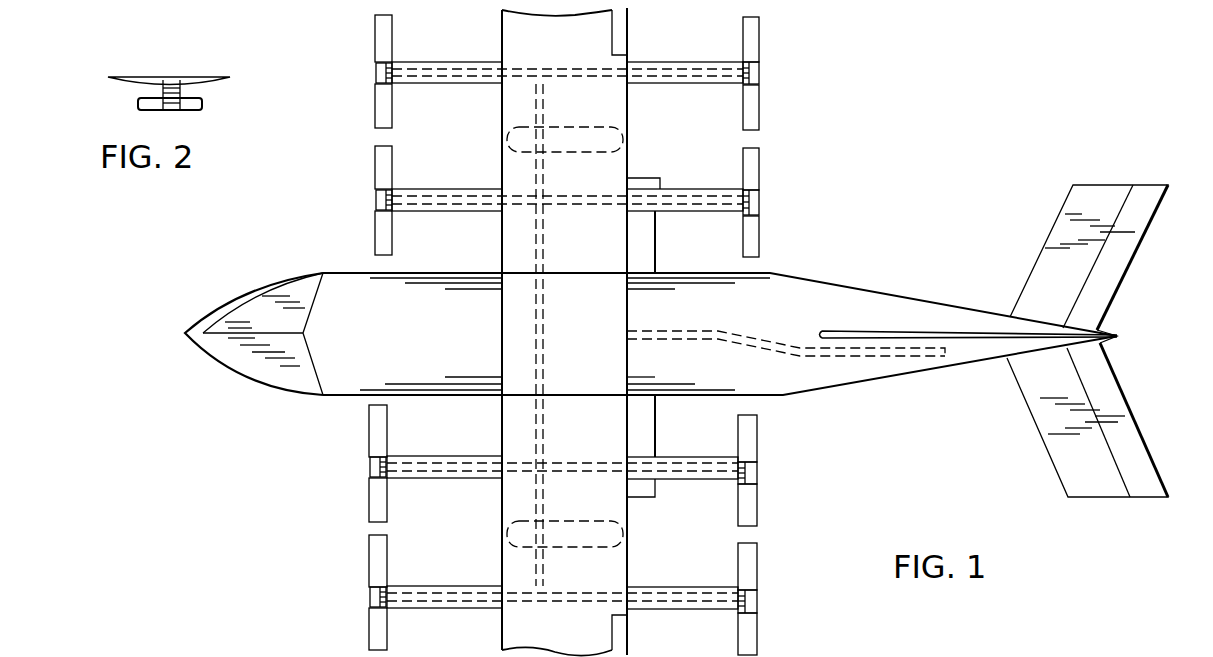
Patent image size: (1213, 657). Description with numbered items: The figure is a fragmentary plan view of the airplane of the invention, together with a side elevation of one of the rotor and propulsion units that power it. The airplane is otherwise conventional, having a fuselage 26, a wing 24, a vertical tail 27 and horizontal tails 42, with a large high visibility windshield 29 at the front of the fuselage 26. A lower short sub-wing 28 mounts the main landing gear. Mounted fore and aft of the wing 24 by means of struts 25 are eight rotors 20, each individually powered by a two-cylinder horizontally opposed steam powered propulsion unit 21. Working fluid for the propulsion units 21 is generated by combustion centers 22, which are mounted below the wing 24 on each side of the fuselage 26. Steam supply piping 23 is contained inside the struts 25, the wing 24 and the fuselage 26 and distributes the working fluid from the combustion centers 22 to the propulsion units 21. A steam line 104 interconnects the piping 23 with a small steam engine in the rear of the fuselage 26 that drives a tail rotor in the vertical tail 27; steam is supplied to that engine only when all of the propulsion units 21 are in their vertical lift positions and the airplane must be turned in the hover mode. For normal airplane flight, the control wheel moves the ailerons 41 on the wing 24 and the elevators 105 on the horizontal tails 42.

In FIG. 1, the rotor 20 is at (379, 110).
In FIG. 2, the rotor 20 is at (192, 78).
In FIG. 1, the propulsion unit 21 is at (372, 72).
In FIG. 2, the propulsion unit 21 is at (128, 92).
In FIG. 1, the combustion center 22 is at (560, 133).
In FIG. 1, the steam supply piping 23 is at (676, 67).
In FIG. 1, the wing 24 is at (612, 97).
In FIG. 1, the strut 25 is at (491, 80).
In FIG. 1, the fuselage 26 is at (790, 288).
In FIG. 1, the vertical tail 27 is at (880, 333).
In FIG. 1, the lower short sub-wing 28 is at (640, 253).
In FIG. 1, the windshield 29 is at (307, 282).
In FIG. 1, the aileron 41 is at (622, 28).
In FIG. 1, the horizontal tail 42 is at (1095, 202).
In FIG. 1, the steam line 104 is at (730, 342).
In FIG. 1, the elevator 105 is at (1090, 372).